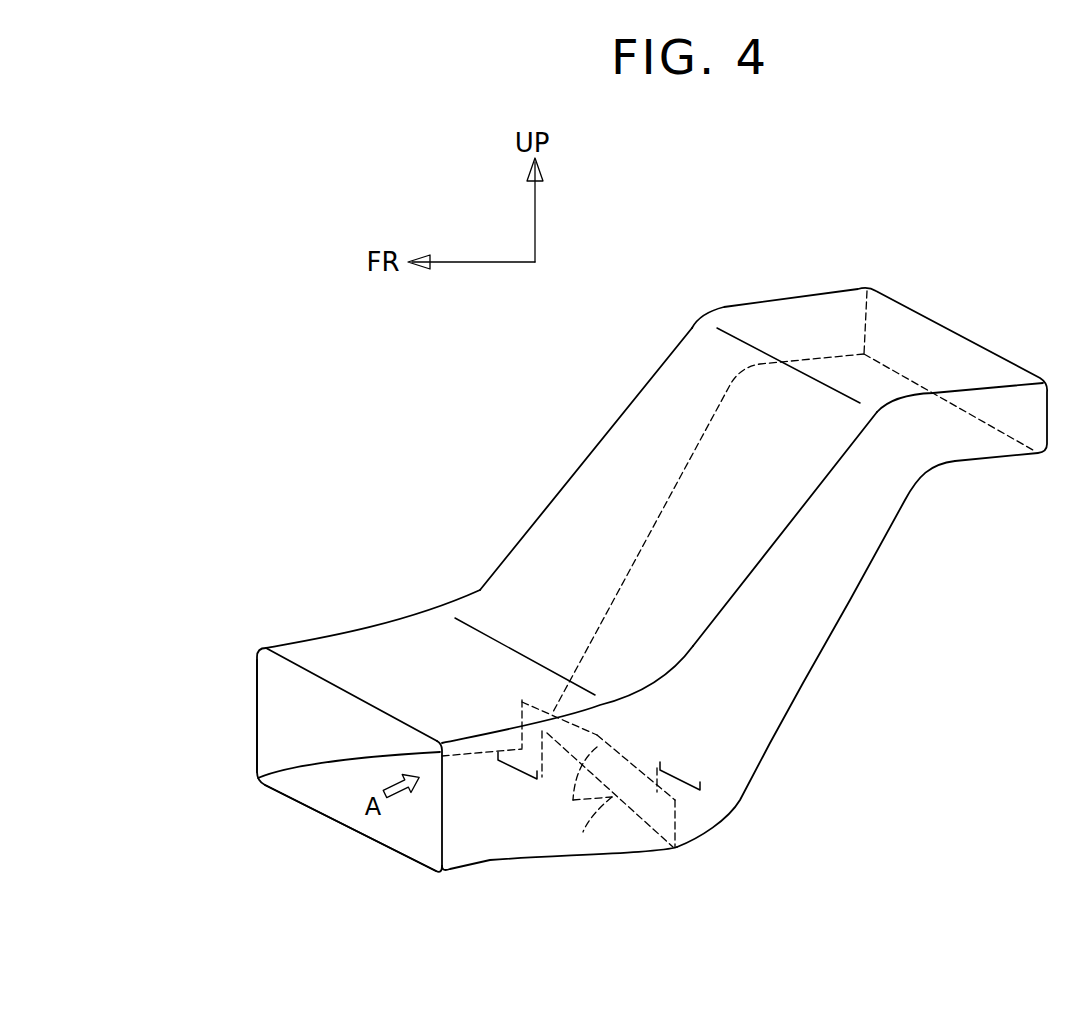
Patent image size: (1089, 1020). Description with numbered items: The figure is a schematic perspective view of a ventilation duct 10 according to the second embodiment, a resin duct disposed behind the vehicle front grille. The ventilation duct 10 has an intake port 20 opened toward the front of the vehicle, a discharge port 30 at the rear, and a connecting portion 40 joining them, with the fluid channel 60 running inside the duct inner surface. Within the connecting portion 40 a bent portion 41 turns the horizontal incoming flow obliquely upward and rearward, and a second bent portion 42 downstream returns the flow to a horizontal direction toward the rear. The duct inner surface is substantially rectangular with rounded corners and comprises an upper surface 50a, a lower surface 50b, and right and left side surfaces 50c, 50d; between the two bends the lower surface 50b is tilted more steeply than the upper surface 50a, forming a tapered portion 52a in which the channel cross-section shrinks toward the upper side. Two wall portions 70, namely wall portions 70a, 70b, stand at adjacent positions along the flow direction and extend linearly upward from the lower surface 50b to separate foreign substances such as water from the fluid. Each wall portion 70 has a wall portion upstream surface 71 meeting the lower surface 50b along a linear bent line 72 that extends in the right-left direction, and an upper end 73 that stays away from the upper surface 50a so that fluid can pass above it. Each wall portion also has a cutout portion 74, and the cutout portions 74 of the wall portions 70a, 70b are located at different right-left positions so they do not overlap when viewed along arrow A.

The ventilation duct 10 is at (488, 438).
The intake port 20 is at (317, 677).
The discharge port 30 is at (907, 309).
The connecting portion 40 is at (620, 414).
The bent portion 41 is at (418, 586).
The second bent portion 42 is at (684, 303).
The upper surface 50a is at (381, 692).
The lower surface 50b is at (344, 796).
The side surface 50c is at (292, 712).
The side surface 50d is at (462, 812).
The tapered portion 52a is at (822, 553).
The fluid channel 60 is at (376, 753).
The wall portion 70 is at (611, 788).
The wall portion 70a is at (685, 820).
The wall portion 70b is at (520, 713).
The wall portion upstream surface 71 is at (597, 734).
The linear bent line 72 is at (624, 823).
The upper end 73 is at (572, 802).
The cutout portion 74 is at (596, 773).